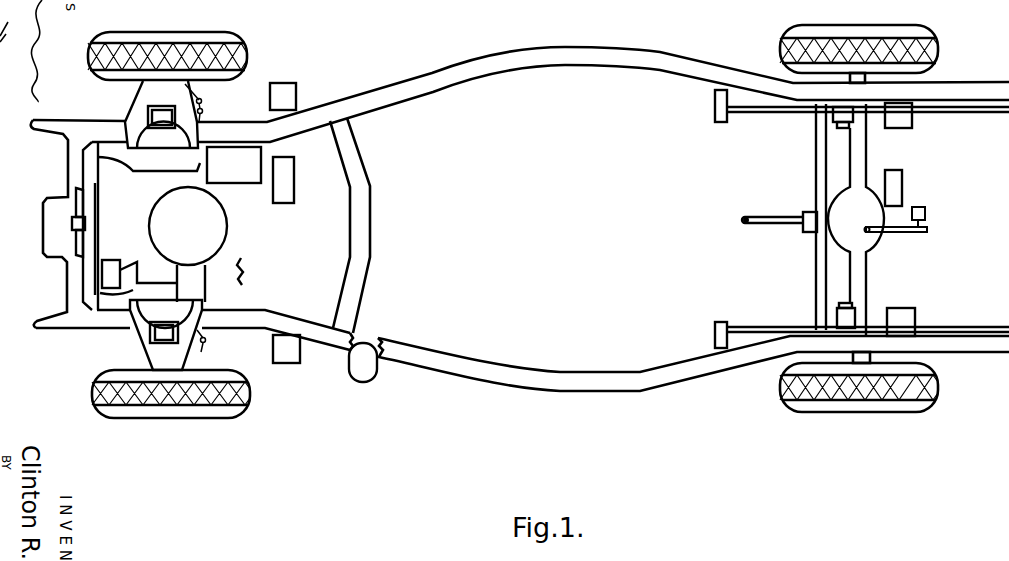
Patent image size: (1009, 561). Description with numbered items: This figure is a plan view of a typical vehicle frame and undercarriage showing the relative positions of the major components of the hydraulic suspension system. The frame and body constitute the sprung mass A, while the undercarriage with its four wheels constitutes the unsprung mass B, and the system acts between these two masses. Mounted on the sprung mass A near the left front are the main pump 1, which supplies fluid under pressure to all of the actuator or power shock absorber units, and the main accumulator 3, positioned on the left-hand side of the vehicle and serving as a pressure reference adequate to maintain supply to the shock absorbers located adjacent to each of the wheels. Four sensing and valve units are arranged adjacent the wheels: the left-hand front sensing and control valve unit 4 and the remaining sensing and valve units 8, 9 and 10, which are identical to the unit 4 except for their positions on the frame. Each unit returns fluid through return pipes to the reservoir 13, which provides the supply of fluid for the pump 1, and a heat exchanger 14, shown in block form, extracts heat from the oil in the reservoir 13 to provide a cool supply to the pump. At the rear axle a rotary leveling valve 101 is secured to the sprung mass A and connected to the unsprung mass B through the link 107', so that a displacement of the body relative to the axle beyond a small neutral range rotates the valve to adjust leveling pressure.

The sprung mass A is at (525, 371).
The unsprung mass B is at (245, 44).
The main pump 1 is at (112, 258).
The accumulator 3 is at (370, 380).
The sensing and control valve unit 4 is at (287, 363).
The sensing and valve unit 8 is at (290, 93).
The sensing and valve unit 9 is at (900, 118).
The sensing and valve unit 10 is at (921, 302).
The reservoir 13 is at (247, 170).
The heat exchanger 14 is at (287, 195).
The rotary leveling valve 101 is at (926, 216).
The link 107' is at (899, 244).